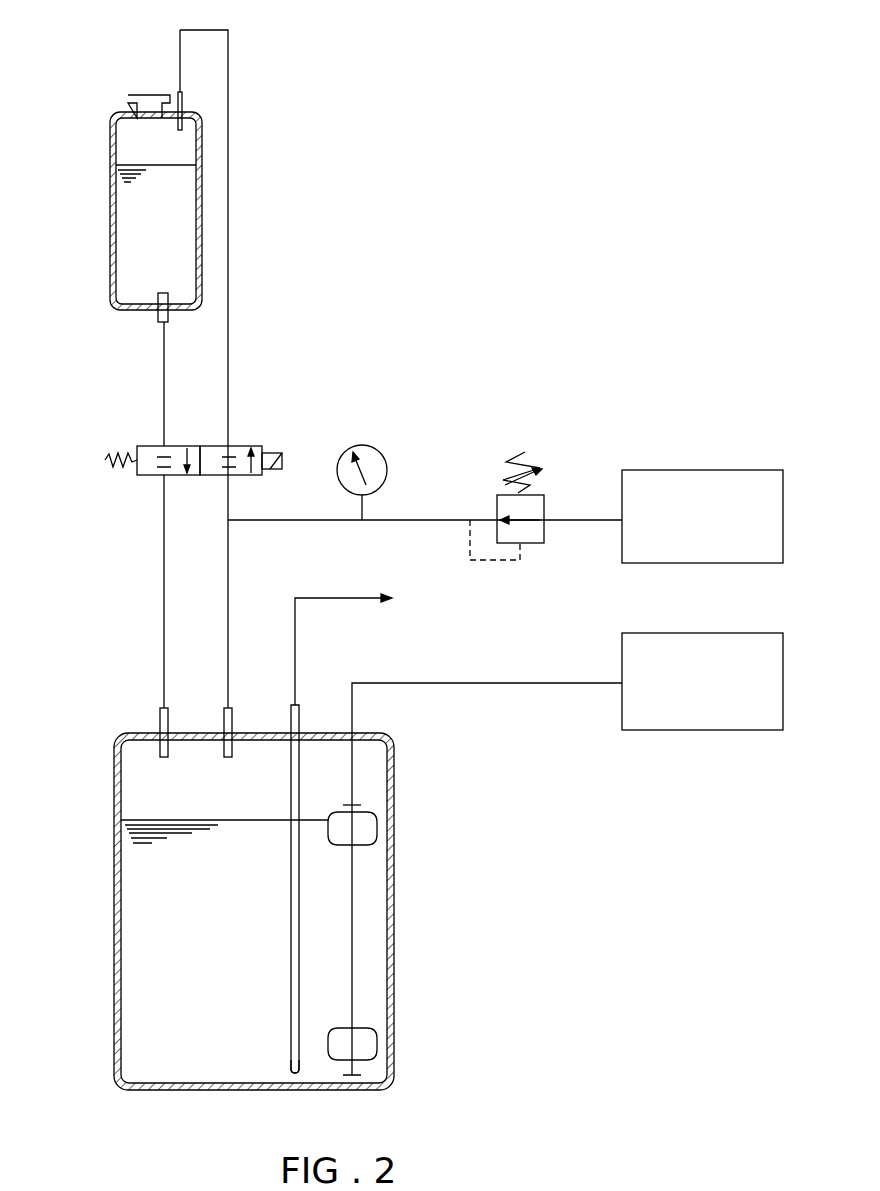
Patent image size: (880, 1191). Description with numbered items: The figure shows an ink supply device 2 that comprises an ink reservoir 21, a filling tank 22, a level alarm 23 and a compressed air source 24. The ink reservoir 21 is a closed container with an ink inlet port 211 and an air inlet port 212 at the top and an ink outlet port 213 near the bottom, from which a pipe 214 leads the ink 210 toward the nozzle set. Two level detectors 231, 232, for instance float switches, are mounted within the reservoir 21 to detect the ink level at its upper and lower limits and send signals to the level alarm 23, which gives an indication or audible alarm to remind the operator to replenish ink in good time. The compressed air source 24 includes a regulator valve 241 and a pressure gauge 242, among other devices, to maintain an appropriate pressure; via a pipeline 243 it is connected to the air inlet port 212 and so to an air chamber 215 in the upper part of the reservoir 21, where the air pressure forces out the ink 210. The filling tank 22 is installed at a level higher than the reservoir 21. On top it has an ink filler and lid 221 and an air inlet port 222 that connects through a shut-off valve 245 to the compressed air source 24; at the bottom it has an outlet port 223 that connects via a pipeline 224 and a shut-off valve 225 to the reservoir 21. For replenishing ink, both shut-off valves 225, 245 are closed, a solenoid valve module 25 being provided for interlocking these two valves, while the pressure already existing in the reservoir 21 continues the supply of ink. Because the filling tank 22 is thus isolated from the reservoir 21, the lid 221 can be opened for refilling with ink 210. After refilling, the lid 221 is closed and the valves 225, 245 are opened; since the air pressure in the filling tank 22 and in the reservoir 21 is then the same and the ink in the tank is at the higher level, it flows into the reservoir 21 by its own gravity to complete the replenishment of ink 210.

The ink supply device 2 is at (483, 265).
The ink reservoir 21 is at (395, 928).
The filling tank 22 is at (110, 200).
The level alarm 23 is at (690, 633).
The compressed air source 24 is at (700, 470).
The solenoid valve module 25 is at (146, 492).
The ink 210 is at (170, 216).
The ink inlet port 211 is at (161, 727).
The air inlet port 212 is at (225, 727).
The ink outlet port 213 is at (294, 1078).
The pipe 214 is at (292, 872).
The air chamber 215 is at (224, 795).
The ink filler and lid 221 is at (128, 98).
The air inlet port 222 is at (178, 92).
The outlet port 223 is at (157, 313).
The pipeline 224 is at (228, 204).
The shut-off valve 225 is at (158, 446).
The level detector 231 is at (377, 830).
The level detector 232 is at (377, 1040).
The regulator valve 241 is at (532, 543).
The pressure gauge 242 is at (379, 446).
The pipeline 243 is at (410, 520).
The shut-off valve 245 is at (240, 446).